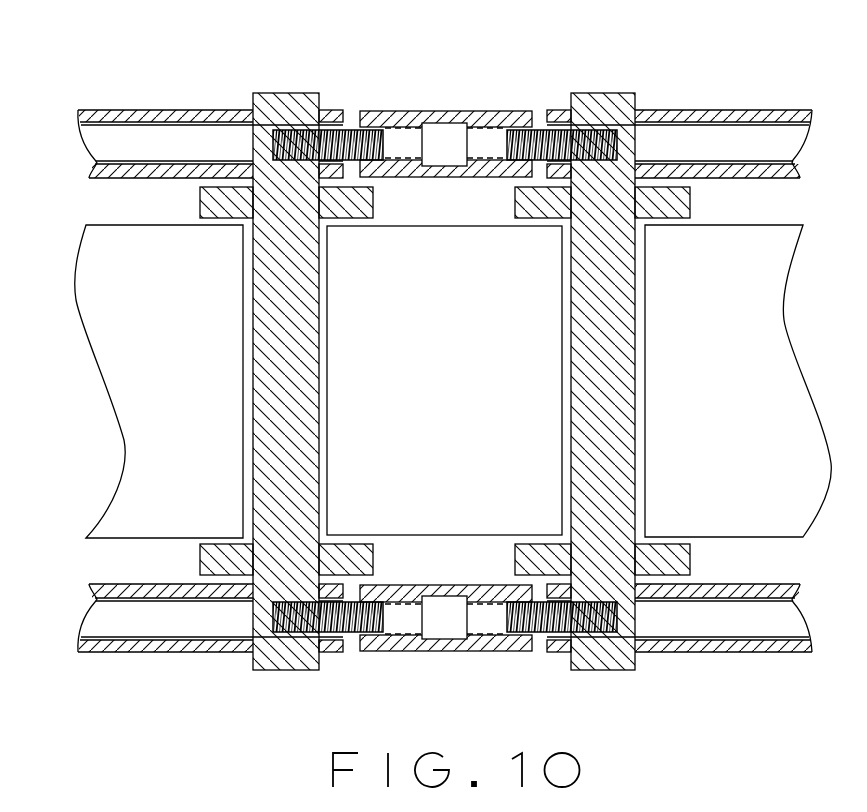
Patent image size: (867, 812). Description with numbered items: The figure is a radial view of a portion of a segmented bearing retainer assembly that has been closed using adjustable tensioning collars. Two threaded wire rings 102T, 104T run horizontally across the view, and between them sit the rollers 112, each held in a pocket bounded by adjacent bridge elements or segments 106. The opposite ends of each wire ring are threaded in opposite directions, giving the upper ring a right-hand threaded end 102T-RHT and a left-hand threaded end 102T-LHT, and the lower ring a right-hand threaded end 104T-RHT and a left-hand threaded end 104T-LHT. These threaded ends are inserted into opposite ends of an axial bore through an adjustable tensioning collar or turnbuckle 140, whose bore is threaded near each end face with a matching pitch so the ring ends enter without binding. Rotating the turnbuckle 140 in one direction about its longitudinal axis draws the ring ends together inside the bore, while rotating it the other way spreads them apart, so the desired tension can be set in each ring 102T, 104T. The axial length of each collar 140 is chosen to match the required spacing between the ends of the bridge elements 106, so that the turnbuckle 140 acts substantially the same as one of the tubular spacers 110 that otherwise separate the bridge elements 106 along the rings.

The tubular spacer 110 is at (153, 110).
The threaded wire ring 102T is at (693, 140).
The right-hand thread of wire ring 102T-RHT is at (361, 115).
The left-hand thread of wire ring 102T-LHT is at (553, 112).
The adjustable tensioning collar or turnbuckle 140 is at (403, 112).
The bridge element or segment 106 is at (283, 395).
The roller 112 is at (160, 288).
The threaded wire ring 104T is at (172, 620).
The right-hand thread of wire ring 104T-RHT is at (338, 645).
The left-hand thread of wire ring 104T-LHT is at (543, 645).